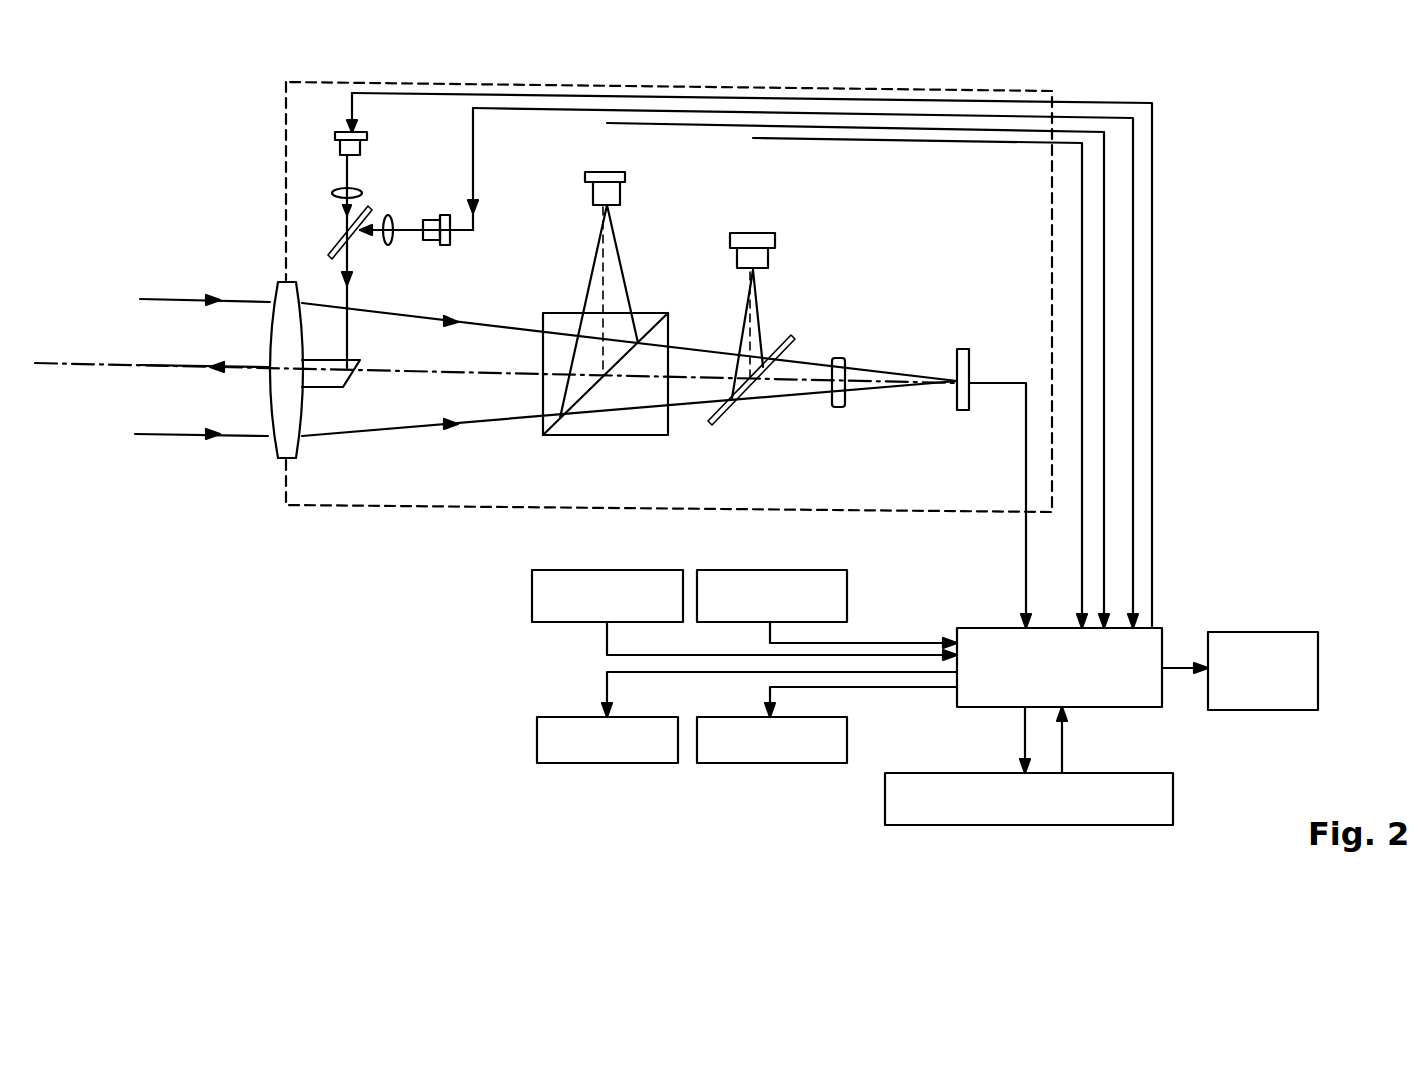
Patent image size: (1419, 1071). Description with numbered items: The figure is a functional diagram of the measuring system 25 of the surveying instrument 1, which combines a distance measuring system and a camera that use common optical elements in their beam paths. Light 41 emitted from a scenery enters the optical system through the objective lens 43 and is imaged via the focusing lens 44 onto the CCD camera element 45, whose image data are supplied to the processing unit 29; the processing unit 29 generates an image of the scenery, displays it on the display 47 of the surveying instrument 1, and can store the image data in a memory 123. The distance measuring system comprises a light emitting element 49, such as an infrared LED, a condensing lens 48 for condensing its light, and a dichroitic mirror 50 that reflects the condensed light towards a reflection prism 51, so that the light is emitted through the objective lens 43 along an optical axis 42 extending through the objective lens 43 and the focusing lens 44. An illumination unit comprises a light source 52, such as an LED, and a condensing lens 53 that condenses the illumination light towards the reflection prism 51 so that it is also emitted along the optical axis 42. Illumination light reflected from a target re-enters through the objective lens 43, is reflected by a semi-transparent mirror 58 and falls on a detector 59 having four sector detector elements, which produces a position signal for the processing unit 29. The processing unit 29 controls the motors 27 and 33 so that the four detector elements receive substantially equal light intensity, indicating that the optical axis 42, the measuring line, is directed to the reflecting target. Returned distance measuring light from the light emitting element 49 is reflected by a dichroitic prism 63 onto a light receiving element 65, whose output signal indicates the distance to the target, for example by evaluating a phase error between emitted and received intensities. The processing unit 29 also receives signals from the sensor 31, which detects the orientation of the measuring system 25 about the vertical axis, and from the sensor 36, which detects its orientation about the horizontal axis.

The surveying instrument 1 is at (1182, 190).
The measuring system 25 is at (720, 84).
The motor 27 is at (630, 759).
The processing unit 29 is at (1050, 690).
The sensor 31 is at (632, 615).
The motor 33 is at (772, 740).
The sensor 36 is at (772, 596).
The light 41 is at (160, 299).
The optical axis 42 is at (52, 367).
The objective lens 43 is at (283, 281).
The focusing lens 44 is at (838, 409).
The CCD camera element 45 is at (969, 362).
The display 47 is at (1293, 696).
The condensing lens 48 is at (391, 245).
The light emitting element 49 is at (447, 246).
The dichroitic mirror 50 is at (333, 257).
The reflection prism 51 is at (343, 388).
The light source 52 is at (367, 137).
The condensing lens 53 is at (362, 193).
The semi-transparent mirror 58 is at (714, 427).
The detector 59 is at (775, 238).
The dichroitic prism 63 is at (597, 428).
The light receiving element 65 is at (625, 176).
The memory 123 is at (1150, 772).